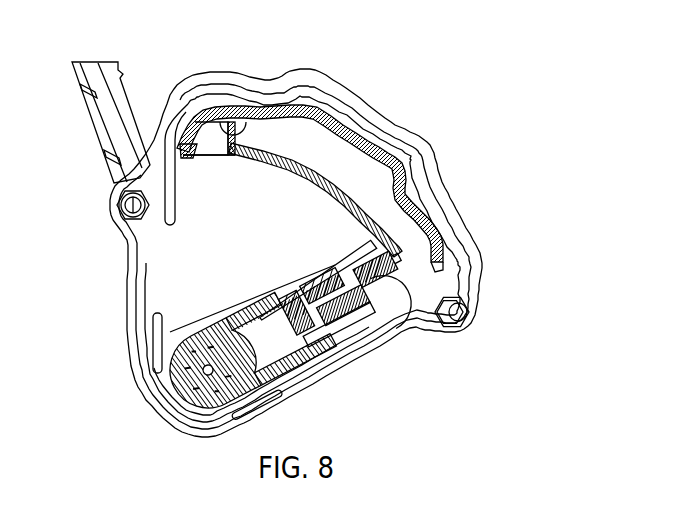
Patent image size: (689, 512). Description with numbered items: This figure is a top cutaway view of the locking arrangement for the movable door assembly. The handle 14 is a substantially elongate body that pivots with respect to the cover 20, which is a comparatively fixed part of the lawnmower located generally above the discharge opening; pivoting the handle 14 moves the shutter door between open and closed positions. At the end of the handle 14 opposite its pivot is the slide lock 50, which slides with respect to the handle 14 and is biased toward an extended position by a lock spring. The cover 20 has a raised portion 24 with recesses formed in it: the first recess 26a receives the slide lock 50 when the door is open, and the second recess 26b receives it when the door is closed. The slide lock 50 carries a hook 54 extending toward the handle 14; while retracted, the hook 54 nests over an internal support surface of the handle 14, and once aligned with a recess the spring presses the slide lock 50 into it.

The handle 14 is at (310, 355).
The cover 20 is at (418, 130).
The raised portion 24 is at (264, 112).
The first recess 26a is at (434, 258).
The second recess 26b is at (223, 130).
The slide lock 50 is at (397, 298).
The hook 54 is at (422, 263).